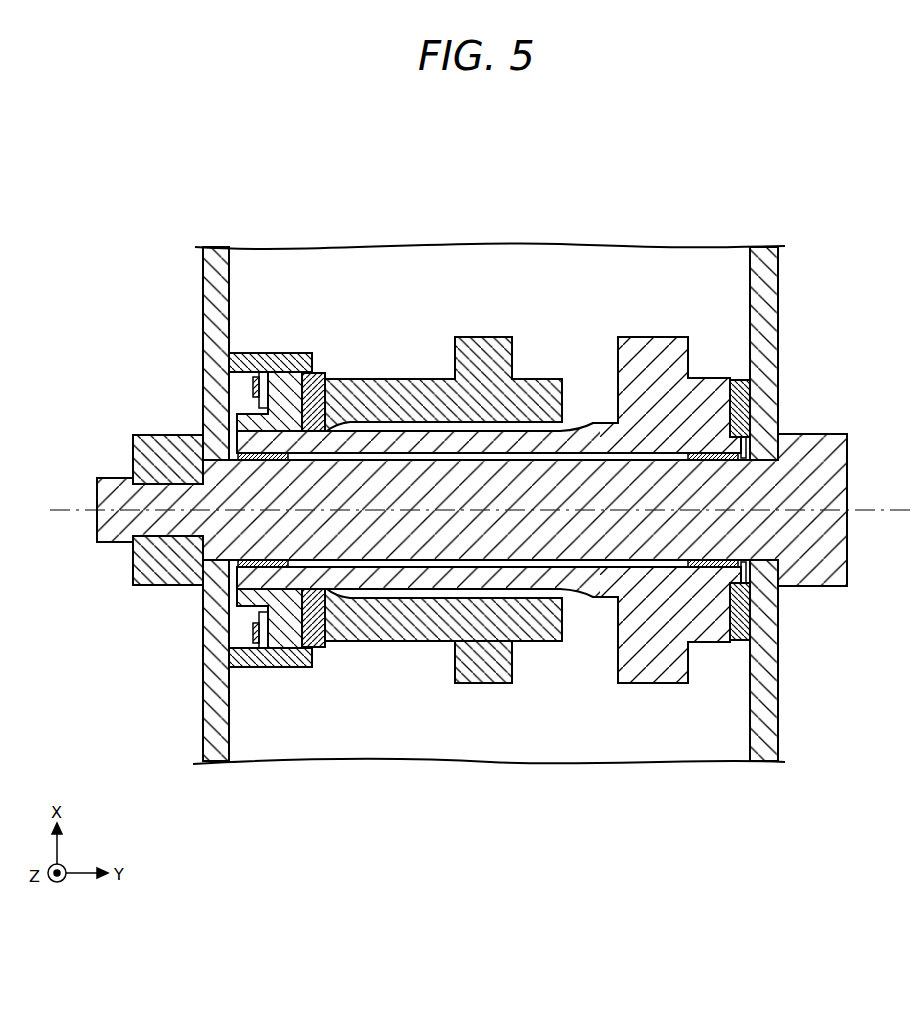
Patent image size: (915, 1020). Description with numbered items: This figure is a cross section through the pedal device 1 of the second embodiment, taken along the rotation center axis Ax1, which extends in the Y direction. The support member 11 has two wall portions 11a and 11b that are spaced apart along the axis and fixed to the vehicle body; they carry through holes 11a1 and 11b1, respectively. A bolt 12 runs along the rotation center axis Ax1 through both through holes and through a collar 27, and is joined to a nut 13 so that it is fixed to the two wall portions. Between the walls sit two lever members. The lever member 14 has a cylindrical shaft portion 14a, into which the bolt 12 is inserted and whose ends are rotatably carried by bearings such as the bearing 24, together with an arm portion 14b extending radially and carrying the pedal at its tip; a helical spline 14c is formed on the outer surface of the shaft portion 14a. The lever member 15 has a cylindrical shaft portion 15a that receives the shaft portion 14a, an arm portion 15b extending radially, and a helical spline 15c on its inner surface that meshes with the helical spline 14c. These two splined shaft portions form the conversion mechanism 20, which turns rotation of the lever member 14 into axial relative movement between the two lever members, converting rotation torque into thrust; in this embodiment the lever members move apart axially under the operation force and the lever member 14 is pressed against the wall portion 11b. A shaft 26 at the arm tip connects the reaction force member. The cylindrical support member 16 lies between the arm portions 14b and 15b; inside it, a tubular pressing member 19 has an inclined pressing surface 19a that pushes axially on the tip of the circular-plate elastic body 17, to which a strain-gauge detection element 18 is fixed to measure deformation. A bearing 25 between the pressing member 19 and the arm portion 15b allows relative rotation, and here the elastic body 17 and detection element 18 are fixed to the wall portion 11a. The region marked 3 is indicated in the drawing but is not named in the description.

The pedal device 1 is at (773, 148).
The rotor unit 3 is at (698, 194).
The support member 11 is at (475, 535).
The wall portion 11a is at (216, 504).
The through hole 11a1 is at (228, 448).
The wall portion 11b is at (780, 275).
The through hole 11b1 is at (757, 457).
The bolt 12 is at (820, 434).
The nut 13 is at (133, 434).
The lever member 14 is at (489, 509).
The shaft portion 14a is at (600, 597).
The arm portion 14b is at (673, 683).
The helical spline 14c is at (537, 432).
The lever member 15 is at (443, 508).
The shaft portion 15a is at (410, 642).
The arm portion 15b is at (487, 683).
The helical spline 15c is at (489, 424).
The support member 16 is at (245, 668).
The elastic body 17 is at (262, 614).
The detection element 18 is at (253, 635).
The pressing member 19 is at (288, 600).
The pressing surface 19a is at (263, 510).
The conversion mechanism 20 is at (403, 380).
The bearing 24 is at (742, 380).
The bearing 25 is at (325, 375).
The shaft 26 is at (275, 377).
The collar 27 is at (720, 455).
The rotation center axis Ax1 is at (897, 508).